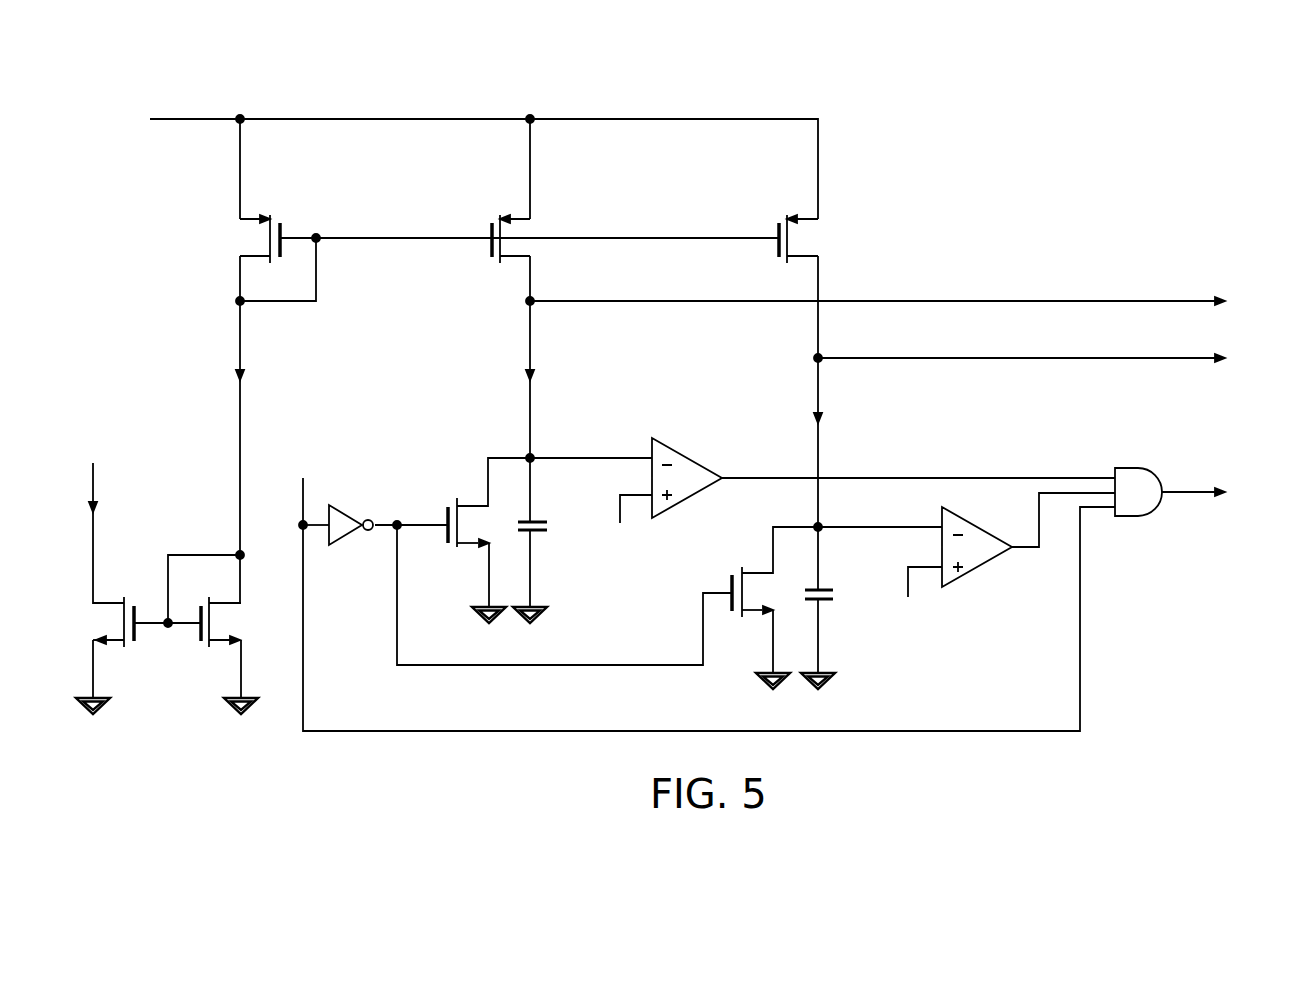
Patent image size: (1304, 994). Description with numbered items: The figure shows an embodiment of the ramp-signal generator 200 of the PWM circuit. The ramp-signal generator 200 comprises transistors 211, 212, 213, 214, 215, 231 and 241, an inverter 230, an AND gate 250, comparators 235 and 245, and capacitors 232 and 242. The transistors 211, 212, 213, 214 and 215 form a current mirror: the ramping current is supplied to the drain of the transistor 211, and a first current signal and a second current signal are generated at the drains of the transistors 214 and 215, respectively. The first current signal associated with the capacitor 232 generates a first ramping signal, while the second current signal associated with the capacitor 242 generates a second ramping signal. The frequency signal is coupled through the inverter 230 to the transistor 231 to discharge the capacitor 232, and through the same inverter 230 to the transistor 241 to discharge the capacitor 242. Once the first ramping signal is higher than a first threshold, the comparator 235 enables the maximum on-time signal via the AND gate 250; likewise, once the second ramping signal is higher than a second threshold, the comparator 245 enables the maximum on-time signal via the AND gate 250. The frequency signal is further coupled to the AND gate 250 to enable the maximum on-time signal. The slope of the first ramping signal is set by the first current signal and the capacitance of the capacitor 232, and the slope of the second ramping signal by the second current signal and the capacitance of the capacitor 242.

The ramp-signal generator 200 is at (1140, 155).
The transistor 211 is at (95, 623).
The transistor 212 is at (245, 629).
The transistor 213 is at (233, 236).
The transistor 214 is at (537, 232).
The transistor 215 is at (818, 239).
The inverter 230 is at (342, 503).
The transistor 231 is at (455, 553).
The capacitor 232 is at (550, 524).
The comparator 235 is at (687, 452).
The transistor 241 is at (737, 567).
The capacitor 242 is at (837, 595).
The comparator 245 is at (972, 573).
The AND gate 250 is at (1130, 518).